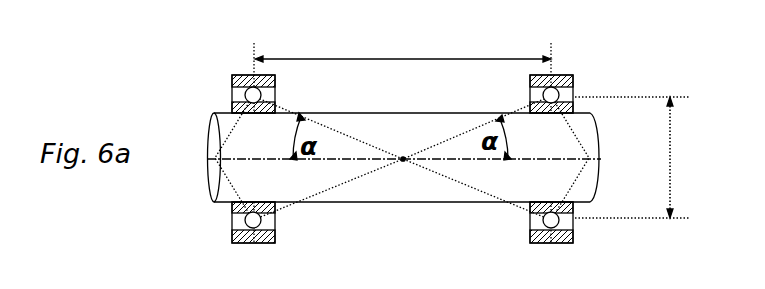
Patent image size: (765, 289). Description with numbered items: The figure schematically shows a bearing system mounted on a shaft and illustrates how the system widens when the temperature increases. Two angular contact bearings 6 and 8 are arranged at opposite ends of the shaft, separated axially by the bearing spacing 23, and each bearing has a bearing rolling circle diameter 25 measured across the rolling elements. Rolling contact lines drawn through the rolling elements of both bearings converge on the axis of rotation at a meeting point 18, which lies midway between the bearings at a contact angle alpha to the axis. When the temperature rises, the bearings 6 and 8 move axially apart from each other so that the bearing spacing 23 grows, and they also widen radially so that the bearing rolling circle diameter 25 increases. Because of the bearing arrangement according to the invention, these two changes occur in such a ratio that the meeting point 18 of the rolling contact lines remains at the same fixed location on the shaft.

The bearing 6 is at (569, 70).
The bearing 8 is at (244, 74).
The meeting point 18 is at (404, 161).
The bearing spacing 23 is at (451, 57).
The bearing rolling circle diameter 25 is at (673, 165).